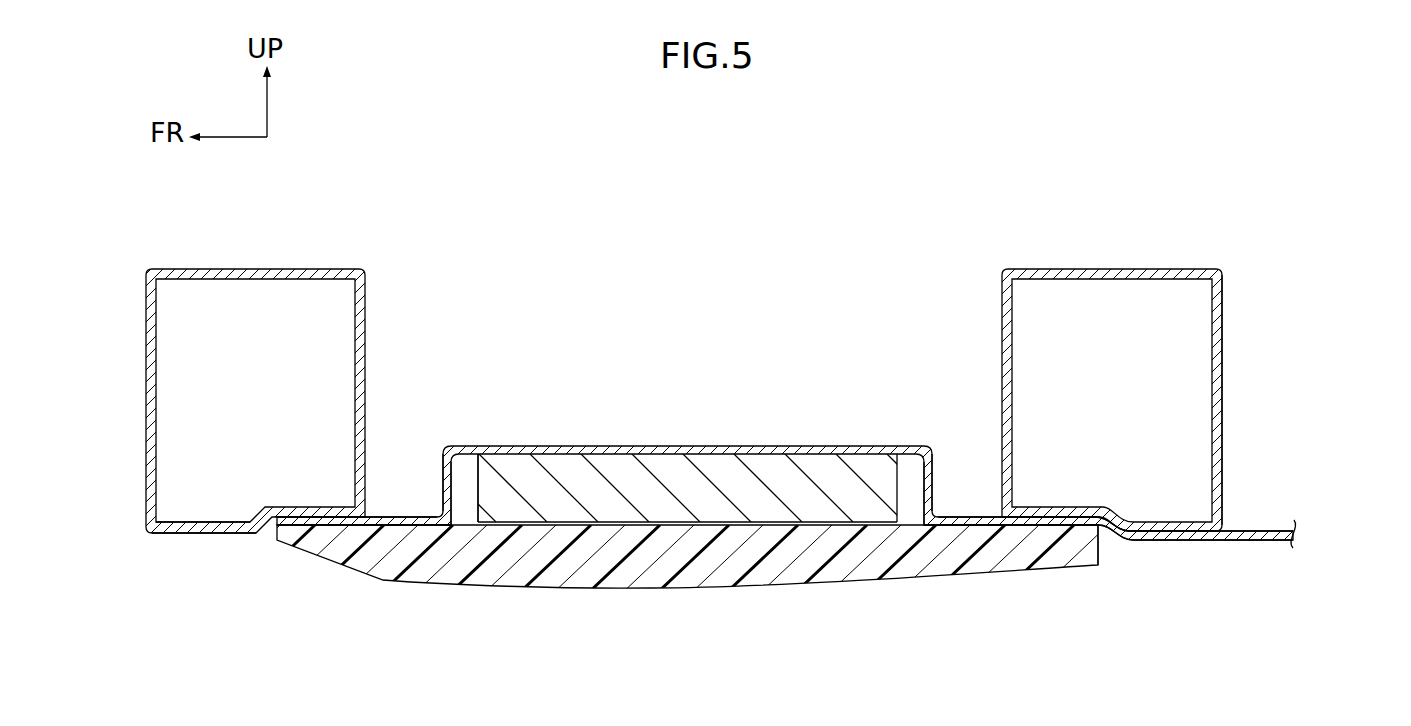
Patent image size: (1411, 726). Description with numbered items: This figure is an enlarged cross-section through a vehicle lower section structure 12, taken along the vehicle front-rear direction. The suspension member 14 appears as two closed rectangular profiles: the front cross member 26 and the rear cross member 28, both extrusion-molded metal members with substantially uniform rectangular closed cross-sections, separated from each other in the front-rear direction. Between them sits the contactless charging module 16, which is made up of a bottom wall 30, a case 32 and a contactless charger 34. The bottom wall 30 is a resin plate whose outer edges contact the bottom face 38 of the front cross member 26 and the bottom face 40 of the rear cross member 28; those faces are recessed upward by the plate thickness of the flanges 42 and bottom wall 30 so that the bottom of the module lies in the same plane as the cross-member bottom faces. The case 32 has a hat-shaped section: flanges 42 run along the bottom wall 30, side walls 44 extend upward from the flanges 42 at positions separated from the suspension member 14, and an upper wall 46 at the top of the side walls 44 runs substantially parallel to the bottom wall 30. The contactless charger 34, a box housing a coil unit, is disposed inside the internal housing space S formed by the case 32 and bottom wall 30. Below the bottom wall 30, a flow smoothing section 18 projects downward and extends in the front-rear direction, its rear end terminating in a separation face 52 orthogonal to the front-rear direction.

The vehicle lower section structure 12 is at (1301, 414).
The suspension member 14 is at (1246, 351).
The contactless charging module 16 is at (862, 432).
The flow smoothing section 18 is at (497, 583).
The front cross member 26 is at (148, 393).
The rear cross member 28 is at (1223, 333).
The bottom wall 30 is at (384, 589).
The case 32 is at (636, 439).
The contactless charger 34 is at (719, 472).
The bottom face of the front cross member 38 is at (220, 533).
The bottom face of the rear cross member 40 is at (1118, 533).
The flange 42 is at (418, 517).
The side wall 44 is at (447, 447).
The upper wall 46 is at (590, 447).
The separation face 52 is at (1100, 538).
The internal housing space S is at (468, 454).